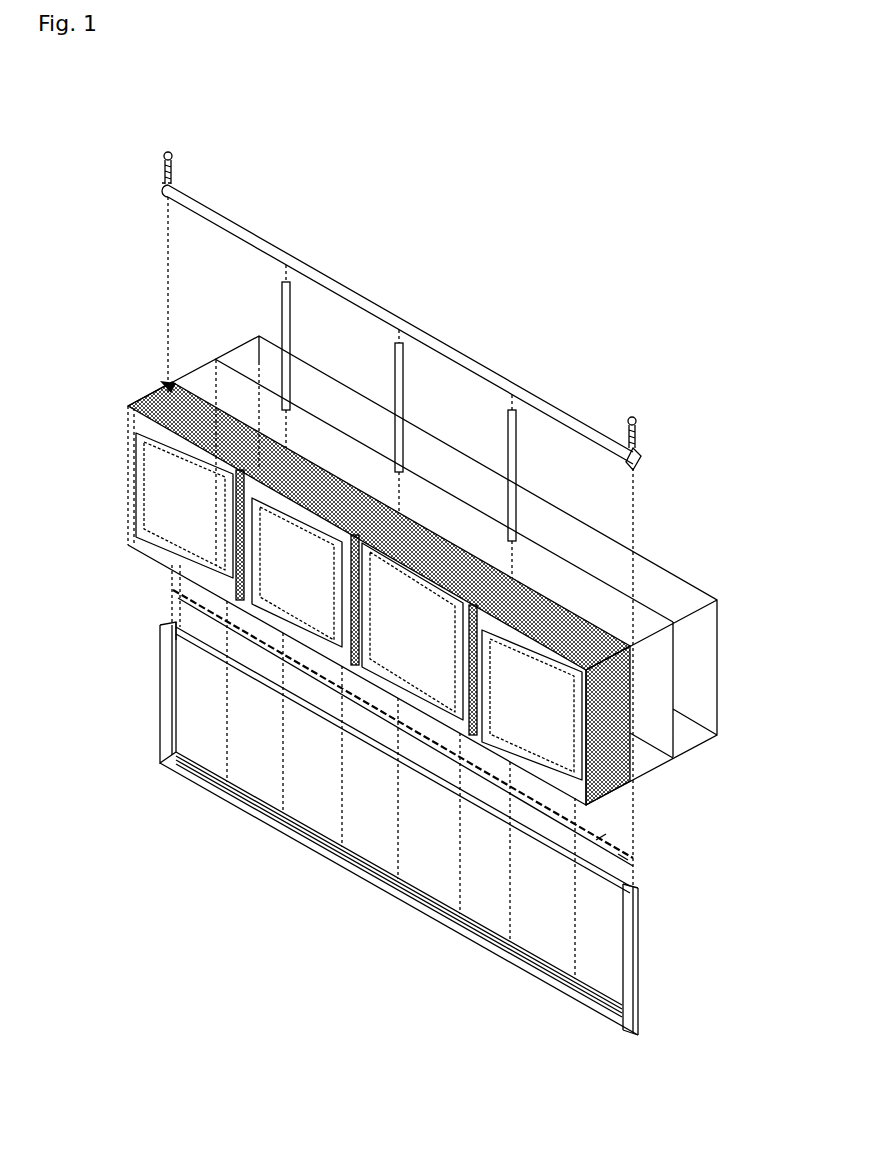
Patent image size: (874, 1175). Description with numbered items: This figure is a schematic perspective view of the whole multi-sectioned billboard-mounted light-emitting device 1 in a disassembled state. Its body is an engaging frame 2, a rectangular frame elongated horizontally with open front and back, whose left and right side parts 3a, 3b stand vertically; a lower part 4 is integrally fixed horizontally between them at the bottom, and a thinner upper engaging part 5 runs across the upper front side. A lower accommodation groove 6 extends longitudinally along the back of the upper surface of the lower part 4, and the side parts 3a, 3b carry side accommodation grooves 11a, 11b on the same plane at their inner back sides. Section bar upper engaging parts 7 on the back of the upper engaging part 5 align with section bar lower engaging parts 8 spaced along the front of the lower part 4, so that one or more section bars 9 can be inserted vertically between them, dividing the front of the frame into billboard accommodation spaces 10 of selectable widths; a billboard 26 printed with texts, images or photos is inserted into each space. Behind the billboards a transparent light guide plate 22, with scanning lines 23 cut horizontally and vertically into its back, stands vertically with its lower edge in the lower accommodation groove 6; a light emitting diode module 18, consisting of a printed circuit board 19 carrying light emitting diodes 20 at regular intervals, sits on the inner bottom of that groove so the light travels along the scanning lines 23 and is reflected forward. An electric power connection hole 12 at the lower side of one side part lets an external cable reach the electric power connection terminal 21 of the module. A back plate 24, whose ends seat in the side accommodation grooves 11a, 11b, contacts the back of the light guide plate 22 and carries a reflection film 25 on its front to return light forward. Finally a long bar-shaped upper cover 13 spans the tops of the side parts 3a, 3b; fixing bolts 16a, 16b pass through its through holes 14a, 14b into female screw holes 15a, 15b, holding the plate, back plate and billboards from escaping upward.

The multi-sectioned billboard-mounted light-emitting device 1 is at (58, 1030).
The engaging frame 2 is at (408, 906).
The side part 3a is at (160, 728).
The side part 3b is at (642, 922).
The lower part 4 is at (200, 783).
The upper engaging part 5 is at (178, 662).
The lower accommodation groove 6 is at (345, 866).
The section bar upper engaging part 7 is at (507, 813).
The section bar lower engaging part 8 is at (275, 805).
The section bar 9 is at (506, 412).
The billboard accommodation space 10 is at (535, 937).
The side accommodation groove 11a is at (168, 688).
The side accommodation groove 11b is at (637, 886).
The electric power connection hole 12 is at (645, 1028).
The upper cover 13 is at (428, 324).
The through hole 14a is at (165, 183).
The through hole 14b is at (636, 451).
The female screw hole 15a is at (166, 624).
The female screw hole 15b is at (640, 890).
The fixing bolt 16a is at (175, 158).
The fixing bolt 16b is at (630, 412).
The light emitting diode module 18 is at (170, 586).
The printed circuit board 19 is at (630, 868).
The light emitting diode 20 is at (600, 838).
The electric power connection terminal 21 is at (623, 856).
The light guide plate 22 is at (168, 388).
The scanning line 23 is at (178, 385).
The back plate 24 is at (670, 578).
The reflection film 25 is at (233, 378).
The billboard 26 is at (128, 436).